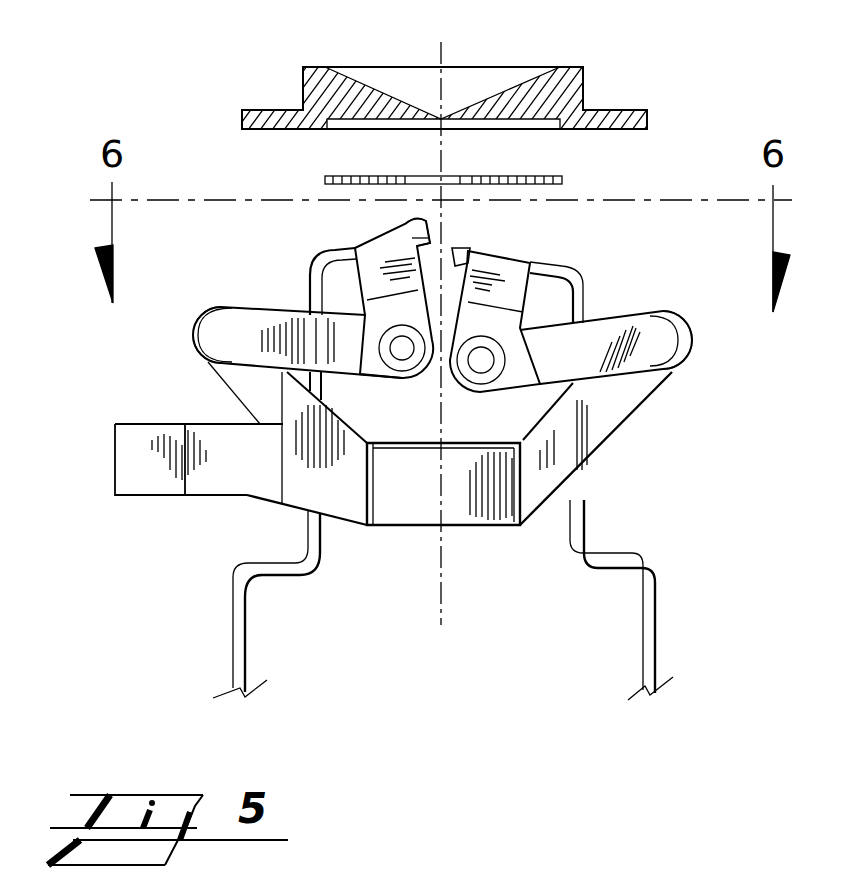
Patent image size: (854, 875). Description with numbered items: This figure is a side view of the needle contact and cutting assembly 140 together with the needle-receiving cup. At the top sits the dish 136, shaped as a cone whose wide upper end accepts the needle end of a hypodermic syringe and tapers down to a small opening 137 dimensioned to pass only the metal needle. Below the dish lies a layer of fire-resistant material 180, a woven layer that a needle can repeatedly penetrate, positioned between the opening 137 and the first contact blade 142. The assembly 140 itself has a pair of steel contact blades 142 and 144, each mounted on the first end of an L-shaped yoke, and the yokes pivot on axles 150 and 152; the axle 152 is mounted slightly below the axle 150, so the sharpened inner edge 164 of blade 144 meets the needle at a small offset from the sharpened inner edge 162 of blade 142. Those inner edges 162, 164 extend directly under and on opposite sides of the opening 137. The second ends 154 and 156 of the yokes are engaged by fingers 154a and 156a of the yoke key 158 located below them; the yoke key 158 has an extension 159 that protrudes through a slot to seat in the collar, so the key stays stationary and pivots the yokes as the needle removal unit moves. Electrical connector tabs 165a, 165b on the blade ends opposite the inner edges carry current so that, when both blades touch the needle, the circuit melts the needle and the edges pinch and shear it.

The dish 136 is at (368, 67).
The opening 137 is at (464, 110).
The layer of fire-resistant material 180 is at (346, 176).
The contact blade 142 is at (325, 253).
The contact blade 144 is at (547, 268).
The sharpened inner edge 162 is at (398, 227).
The sharpened inner edge 164 is at (452, 248).
The axle 150 is at (405, 352).
The axle 152 is at (482, 362).
The second end of yoke 154 is at (255, 308).
The finger 154a is at (193, 325).
The second end of yoke 156 is at (598, 333).
The finger 156a is at (693, 338).
The needle contact and cutting assembly 140 is at (120, 396).
The extension 159 is at (115, 467).
The yoke key 158 is at (477, 526).
The electrical connector tab 165a is at (248, 636).
The electrical connector tab 165b is at (643, 652).